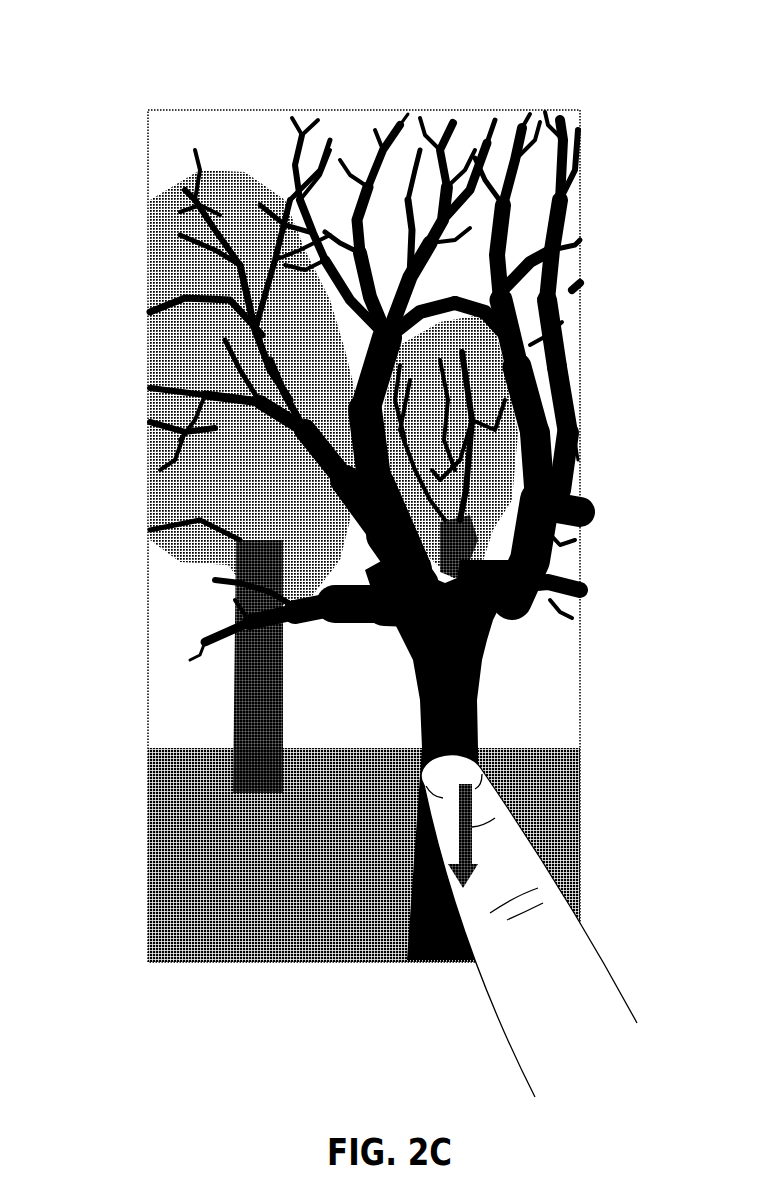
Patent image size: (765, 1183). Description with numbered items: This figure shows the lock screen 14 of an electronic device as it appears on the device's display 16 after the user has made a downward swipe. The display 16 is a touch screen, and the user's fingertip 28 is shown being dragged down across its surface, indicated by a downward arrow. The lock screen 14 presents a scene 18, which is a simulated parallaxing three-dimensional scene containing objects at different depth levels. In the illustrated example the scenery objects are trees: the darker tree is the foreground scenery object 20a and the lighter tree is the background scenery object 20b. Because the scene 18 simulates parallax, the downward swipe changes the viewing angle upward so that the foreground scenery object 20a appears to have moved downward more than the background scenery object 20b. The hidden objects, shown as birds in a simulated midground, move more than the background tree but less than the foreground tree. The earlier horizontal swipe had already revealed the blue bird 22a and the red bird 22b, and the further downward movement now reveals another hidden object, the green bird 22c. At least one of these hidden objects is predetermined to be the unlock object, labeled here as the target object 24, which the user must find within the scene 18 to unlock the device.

The lock screen 14 is at (183, 86).
The display 16 is at (578, 283).
The scene 18 is at (521, 704).
The foreground scenery object 20a is at (478, 657).
The background scenery object 20b is at (250, 695).
The blue bird 22a is at (353, 583).
The red bird 22b is at (335, 428).
The green bird 22c is at (466, 530).
The target object 24 is at (463, 565).
The fingertip 28 is at (420, 787).